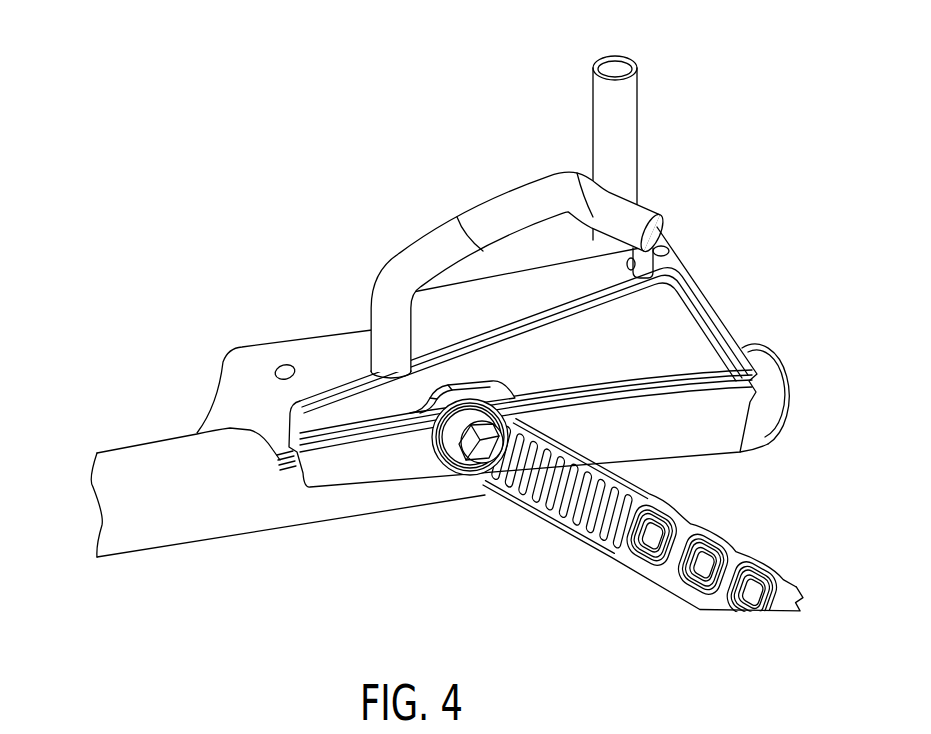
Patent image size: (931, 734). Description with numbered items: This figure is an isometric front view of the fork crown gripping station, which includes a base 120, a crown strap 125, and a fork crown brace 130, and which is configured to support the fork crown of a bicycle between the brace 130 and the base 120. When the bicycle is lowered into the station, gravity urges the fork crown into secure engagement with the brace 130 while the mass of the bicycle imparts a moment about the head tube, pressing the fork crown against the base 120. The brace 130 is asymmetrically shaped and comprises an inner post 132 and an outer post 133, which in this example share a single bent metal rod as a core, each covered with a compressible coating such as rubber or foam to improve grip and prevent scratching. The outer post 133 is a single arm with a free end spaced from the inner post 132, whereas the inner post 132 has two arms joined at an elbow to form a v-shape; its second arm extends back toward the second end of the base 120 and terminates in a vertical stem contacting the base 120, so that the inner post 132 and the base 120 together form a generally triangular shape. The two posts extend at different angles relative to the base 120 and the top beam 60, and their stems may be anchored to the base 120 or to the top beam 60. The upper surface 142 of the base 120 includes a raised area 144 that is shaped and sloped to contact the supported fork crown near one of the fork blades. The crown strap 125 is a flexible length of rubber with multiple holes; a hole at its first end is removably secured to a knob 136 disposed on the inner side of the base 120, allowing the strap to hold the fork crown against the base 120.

The top beam 60 is at (128, 461).
The base 120 is at (701, 314).
The crown strap 125 is at (738, 570).
The fork crown brace 130 is at (528, 126).
The inner post 132 is at (519, 256).
The outer post 133 is at (620, 113).
The knob 136 is at (488, 449).
The upper surface 142 is at (448, 315).
The raised area 144 is at (274, 354).